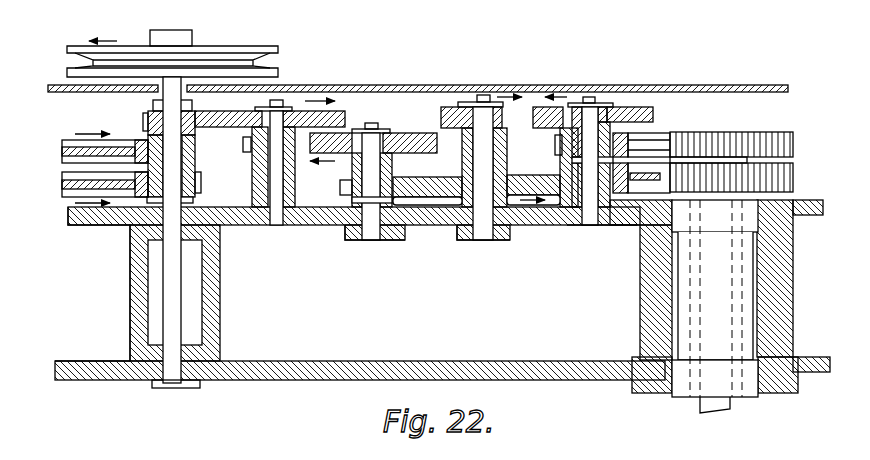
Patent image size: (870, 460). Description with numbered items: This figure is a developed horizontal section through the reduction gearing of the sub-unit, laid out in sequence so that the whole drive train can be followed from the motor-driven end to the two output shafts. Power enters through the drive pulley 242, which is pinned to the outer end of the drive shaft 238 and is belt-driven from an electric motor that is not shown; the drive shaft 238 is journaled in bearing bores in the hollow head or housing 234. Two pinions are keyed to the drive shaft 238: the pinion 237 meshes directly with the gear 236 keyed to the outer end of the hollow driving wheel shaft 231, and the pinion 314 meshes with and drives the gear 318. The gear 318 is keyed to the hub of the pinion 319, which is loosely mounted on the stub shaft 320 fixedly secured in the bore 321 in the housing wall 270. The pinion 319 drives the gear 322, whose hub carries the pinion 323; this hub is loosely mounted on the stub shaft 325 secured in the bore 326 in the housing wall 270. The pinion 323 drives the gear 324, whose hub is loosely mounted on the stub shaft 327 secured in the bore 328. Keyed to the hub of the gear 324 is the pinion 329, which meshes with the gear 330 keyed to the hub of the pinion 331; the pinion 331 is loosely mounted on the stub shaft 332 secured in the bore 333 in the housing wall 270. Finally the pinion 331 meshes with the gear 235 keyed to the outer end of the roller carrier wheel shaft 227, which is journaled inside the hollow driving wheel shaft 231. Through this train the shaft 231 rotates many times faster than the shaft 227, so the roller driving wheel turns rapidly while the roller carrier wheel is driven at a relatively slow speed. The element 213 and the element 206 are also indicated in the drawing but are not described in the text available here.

The drive pulley 242 is at (240, 45).
The pinion 314 is at (143, 122).
The gear 235 is at (62, 154).
The gear 236 is at (62, 186).
The pinion 319 is at (243, 144).
The hub 213 is at (195, 160).
The pinion 237 is at (201, 185).
The gear 318 is at (343, 110).
The gear 322 is at (398, 132).
The pinion 329 is at (452, 108).
The gear 330 is at (539, 108).
The gear 324 is at (414, 178).
The pinion 323 is at (340, 187).
The pinion 331 is at (555, 148).
The bore 321 is at (268, 228).
The stub shaft 320 is at (213, 300).
The housing wall 270 is at (314, 226).
The bore 326 is at (356, 242).
The stub shaft 325 is at (376, 241).
The bore 328 is at (462, 242).
The stub shaft 327 is at (485, 242).
The bore 333 is at (572, 228).
The stub shaft 332 is at (588, 228).
The drive shaft 238 is at (172, 297).
The housing wall 206 is at (163, 353).
The hollow head or housing 234 is at (315, 380).
The hollow driving wheel shaft 231 is at (755, 290).
The roller carrier wheel shaft 227 is at (740, 325).